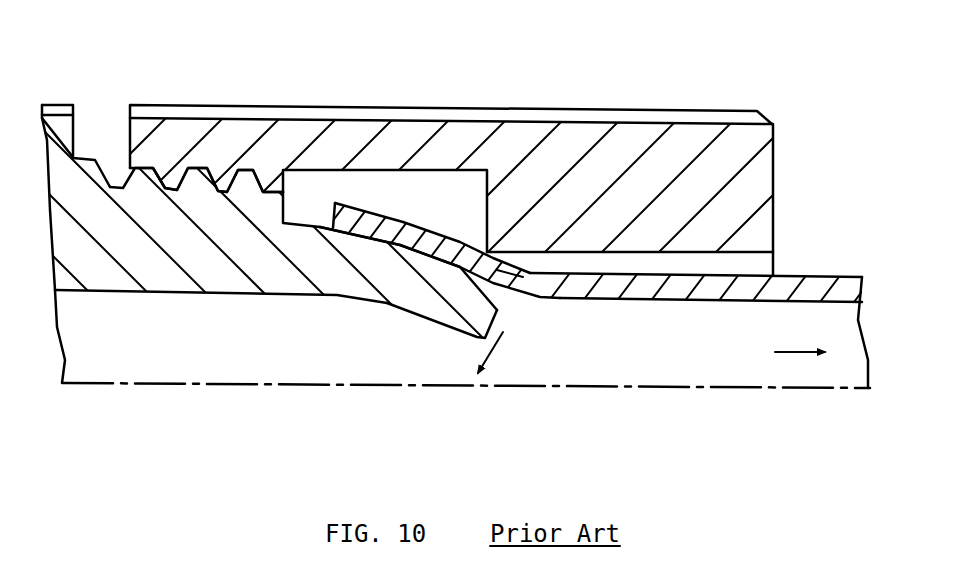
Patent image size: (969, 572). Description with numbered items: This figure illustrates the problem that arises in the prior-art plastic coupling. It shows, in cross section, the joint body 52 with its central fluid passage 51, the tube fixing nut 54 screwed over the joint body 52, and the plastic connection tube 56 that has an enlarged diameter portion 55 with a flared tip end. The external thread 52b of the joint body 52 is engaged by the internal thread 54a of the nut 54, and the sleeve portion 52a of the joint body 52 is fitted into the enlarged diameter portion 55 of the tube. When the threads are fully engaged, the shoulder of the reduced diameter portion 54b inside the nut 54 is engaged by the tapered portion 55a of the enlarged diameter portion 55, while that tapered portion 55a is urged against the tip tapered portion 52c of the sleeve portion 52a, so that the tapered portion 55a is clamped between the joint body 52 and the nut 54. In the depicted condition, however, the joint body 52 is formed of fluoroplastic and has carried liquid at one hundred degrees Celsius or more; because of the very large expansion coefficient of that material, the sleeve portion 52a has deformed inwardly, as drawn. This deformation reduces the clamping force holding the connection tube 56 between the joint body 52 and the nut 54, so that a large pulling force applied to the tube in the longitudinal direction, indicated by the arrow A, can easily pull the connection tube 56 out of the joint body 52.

The fluid passage 51 is at (178, 342).
The joint body 52 is at (62, 123).
The sleeve portion 52a is at (387, 270).
The external thread 52b is at (197, 177).
The tip tapered portion 52c is at (483, 292).
The tube fixing nut 54 is at (662, 108).
The internal thread 54a is at (220, 183).
The reduced diameter portion 54b is at (486, 248).
The enlarged diameter portion 55 is at (380, 220).
The tapered portion 55a is at (542, 293).
The connection tube 56 is at (818, 292).